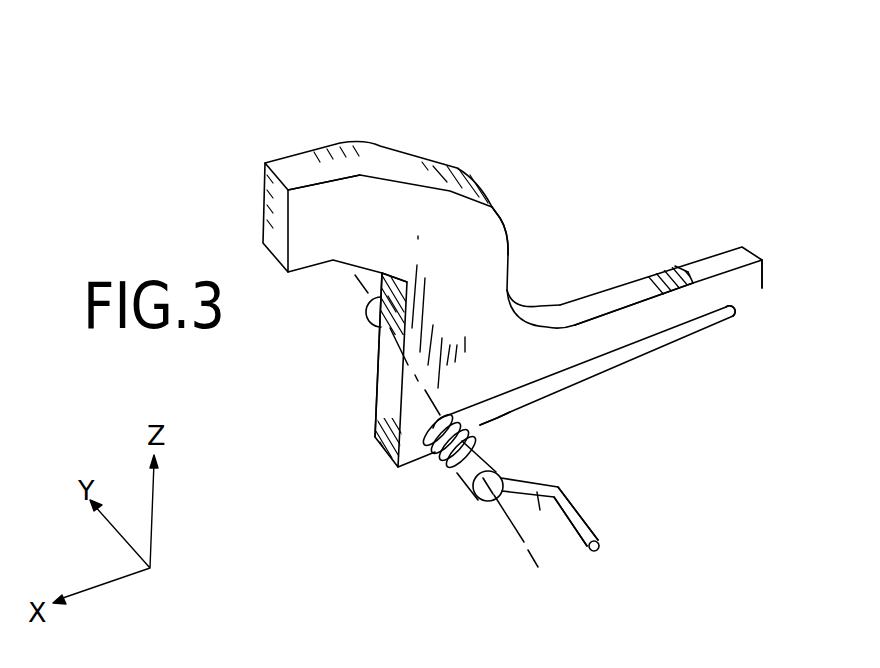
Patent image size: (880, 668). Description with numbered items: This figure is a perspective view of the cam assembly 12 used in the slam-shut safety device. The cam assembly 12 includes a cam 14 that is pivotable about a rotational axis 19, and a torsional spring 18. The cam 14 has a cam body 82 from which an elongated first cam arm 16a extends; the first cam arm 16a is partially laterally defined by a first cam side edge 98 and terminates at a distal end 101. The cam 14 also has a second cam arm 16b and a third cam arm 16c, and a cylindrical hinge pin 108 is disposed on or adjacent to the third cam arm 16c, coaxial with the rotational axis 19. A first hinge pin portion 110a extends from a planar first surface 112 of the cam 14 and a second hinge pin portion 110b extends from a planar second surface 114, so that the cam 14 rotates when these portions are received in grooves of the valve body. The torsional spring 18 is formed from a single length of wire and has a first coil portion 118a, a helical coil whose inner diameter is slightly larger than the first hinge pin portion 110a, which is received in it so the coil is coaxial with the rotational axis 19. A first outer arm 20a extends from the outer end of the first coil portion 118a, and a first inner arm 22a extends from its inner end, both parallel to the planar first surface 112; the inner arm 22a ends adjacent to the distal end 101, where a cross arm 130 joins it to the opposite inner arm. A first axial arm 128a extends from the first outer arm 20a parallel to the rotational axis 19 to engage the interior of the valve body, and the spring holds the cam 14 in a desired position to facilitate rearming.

The cam 14 is at (355, 86).
The cam assembly 12 is at (582, 150).
The first cam arm 16a is at (703, 297).
The second cam arm 16b is at (325, 210).
The third cam arm 16c is at (395, 465).
The cam body 82 is at (470, 248).
The first cam side edge 98 is at (625, 303).
The distal end of first cam arm 101 is at (738, 285).
The cross arm 130 is at (732, 312).
The first inner arm 22a is at (612, 370).
The first coil portion 118a is at (498, 427).
The first hinge pin portion 110a is at (470, 477).
The second hinge pin portion 110b is at (367, 318).
The planar first surface 112 is at (520, 382).
The planar second surface 114 is at (362, 405).
The hinge pin 108 is at (532, 457).
The rotational axis 19 is at (512, 532).
The first axial arm 128a is at (587, 520).
The torsional spring 18 is at (617, 545).
The first outer arm 20a is at (537, 493).